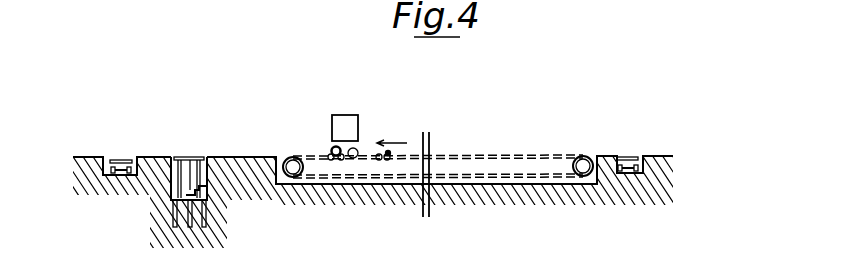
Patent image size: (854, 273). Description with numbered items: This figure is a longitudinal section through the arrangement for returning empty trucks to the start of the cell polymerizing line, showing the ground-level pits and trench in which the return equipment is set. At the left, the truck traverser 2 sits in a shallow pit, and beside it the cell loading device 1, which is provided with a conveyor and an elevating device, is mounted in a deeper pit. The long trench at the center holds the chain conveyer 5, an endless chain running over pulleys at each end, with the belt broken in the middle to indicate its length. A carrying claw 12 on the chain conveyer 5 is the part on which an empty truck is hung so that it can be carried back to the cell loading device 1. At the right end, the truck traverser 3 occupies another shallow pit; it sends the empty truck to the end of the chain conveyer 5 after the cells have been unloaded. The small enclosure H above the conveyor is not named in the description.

The cell loading device 1 is at (192, 157).
The truck traverser 2 is at (122, 159).
The truck traverser 3 is at (630, 156).
The chain conveyer 5 is at (313, 157).
The carrying claw 12 is at (386, 153).
The hopper / housing above belt H is at (346, 122).